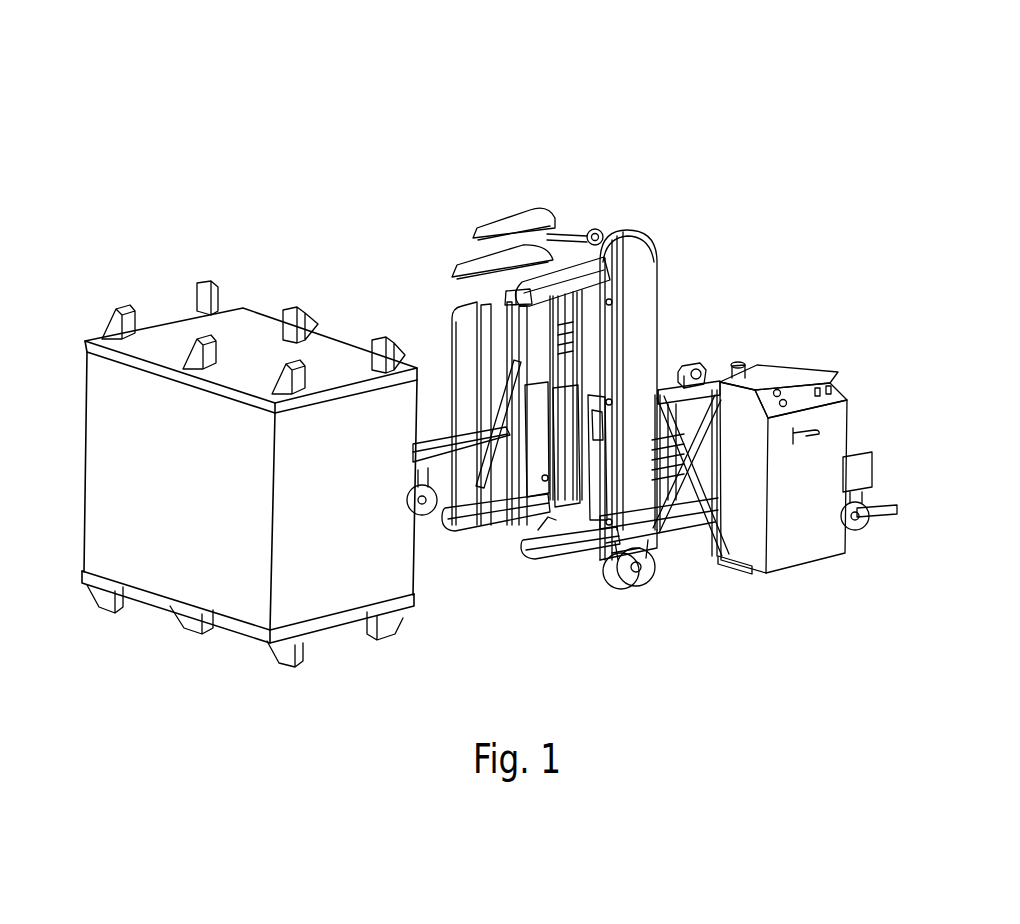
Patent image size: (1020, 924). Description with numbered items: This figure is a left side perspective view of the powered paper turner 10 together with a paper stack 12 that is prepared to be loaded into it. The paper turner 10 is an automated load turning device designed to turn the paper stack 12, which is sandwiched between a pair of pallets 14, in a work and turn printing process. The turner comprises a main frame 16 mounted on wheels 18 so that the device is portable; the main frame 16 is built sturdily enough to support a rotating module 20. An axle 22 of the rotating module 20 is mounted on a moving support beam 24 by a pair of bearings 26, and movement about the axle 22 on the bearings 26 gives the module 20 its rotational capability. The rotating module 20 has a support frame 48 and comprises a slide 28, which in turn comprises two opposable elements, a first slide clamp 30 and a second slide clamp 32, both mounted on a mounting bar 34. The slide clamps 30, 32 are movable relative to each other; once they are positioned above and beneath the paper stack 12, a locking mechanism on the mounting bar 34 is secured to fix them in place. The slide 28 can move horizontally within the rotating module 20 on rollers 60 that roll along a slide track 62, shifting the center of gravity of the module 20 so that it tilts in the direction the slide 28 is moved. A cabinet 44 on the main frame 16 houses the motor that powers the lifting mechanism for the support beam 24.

The powered paper turner 10 is at (600, 202).
The paper stack 12 is at (217, 433).
The pallets 14 is at (270, 348).
The main frame 16 is at (652, 525).
The wheels 18 is at (621, 580).
The rotating module 20 is at (640, 287).
The axle 22 is at (668, 362).
The moving support beam 24 is at (703, 543).
The bearings 26 is at (700, 375).
The slide 28 is at (595, 383).
The first slide clamp 30 is at (515, 262).
The second slide clamp 32 is at (555, 548).
The mounting bar 34 is at (557, 380).
The cabinet 44 is at (785, 377).
The support frame 48 is at (633, 246).
The rollers 60 is at (600, 280).
The slide track 62 is at (618, 353).